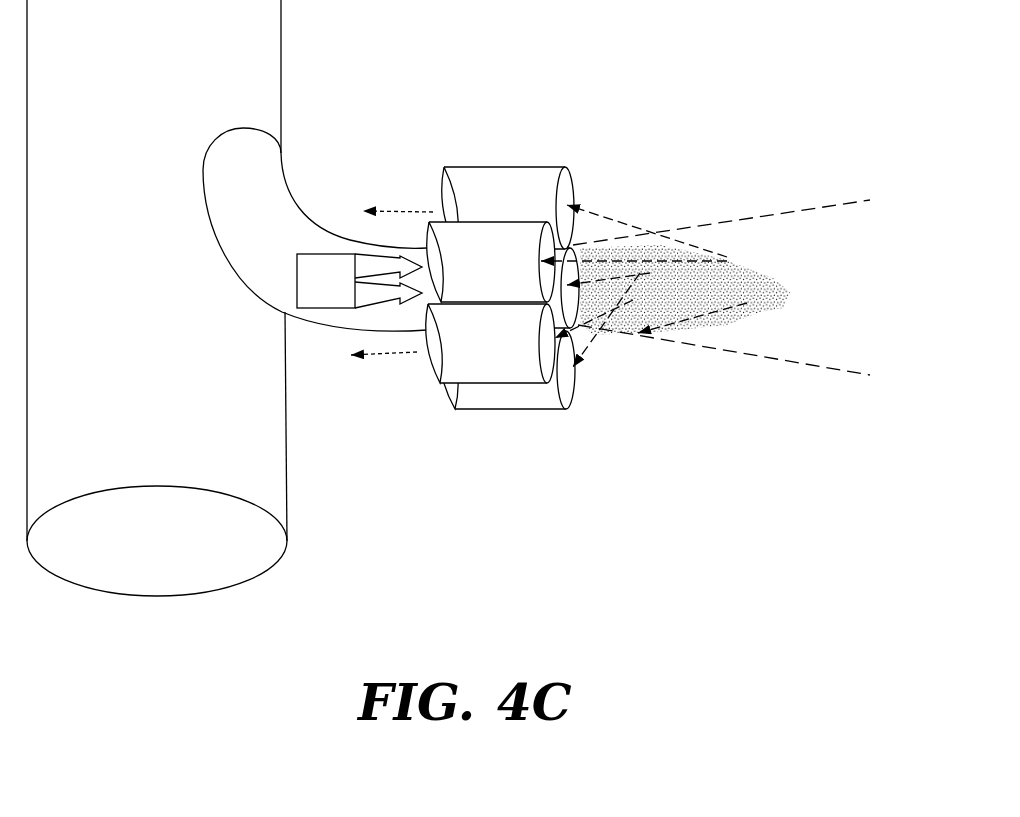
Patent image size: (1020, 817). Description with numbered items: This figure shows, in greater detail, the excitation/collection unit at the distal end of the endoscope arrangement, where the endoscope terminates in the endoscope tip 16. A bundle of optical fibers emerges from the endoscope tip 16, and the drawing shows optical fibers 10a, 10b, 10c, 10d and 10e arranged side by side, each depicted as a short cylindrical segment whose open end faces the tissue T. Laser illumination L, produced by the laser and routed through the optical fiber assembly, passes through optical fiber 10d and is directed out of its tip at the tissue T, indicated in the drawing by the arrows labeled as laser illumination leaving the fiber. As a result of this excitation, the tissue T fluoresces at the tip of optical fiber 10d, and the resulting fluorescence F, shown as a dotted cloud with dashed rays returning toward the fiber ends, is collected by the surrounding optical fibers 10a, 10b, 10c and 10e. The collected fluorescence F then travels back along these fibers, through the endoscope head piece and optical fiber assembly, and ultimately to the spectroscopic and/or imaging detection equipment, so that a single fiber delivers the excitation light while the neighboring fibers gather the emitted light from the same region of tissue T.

The endoscope tip 16 is at (263, 443).
The optical fiber 10d is at (268, 204).
The optical fiber 10a is at (455, 182).
The optical fiber 10b is at (437, 237).
The optical fiber 10c is at (438, 375).
The optical fiber 10e is at (457, 400).
The laser illumination L is at (310, 257).
The tissue T is at (730, 146).
The fluorescence F is at (390, 210).